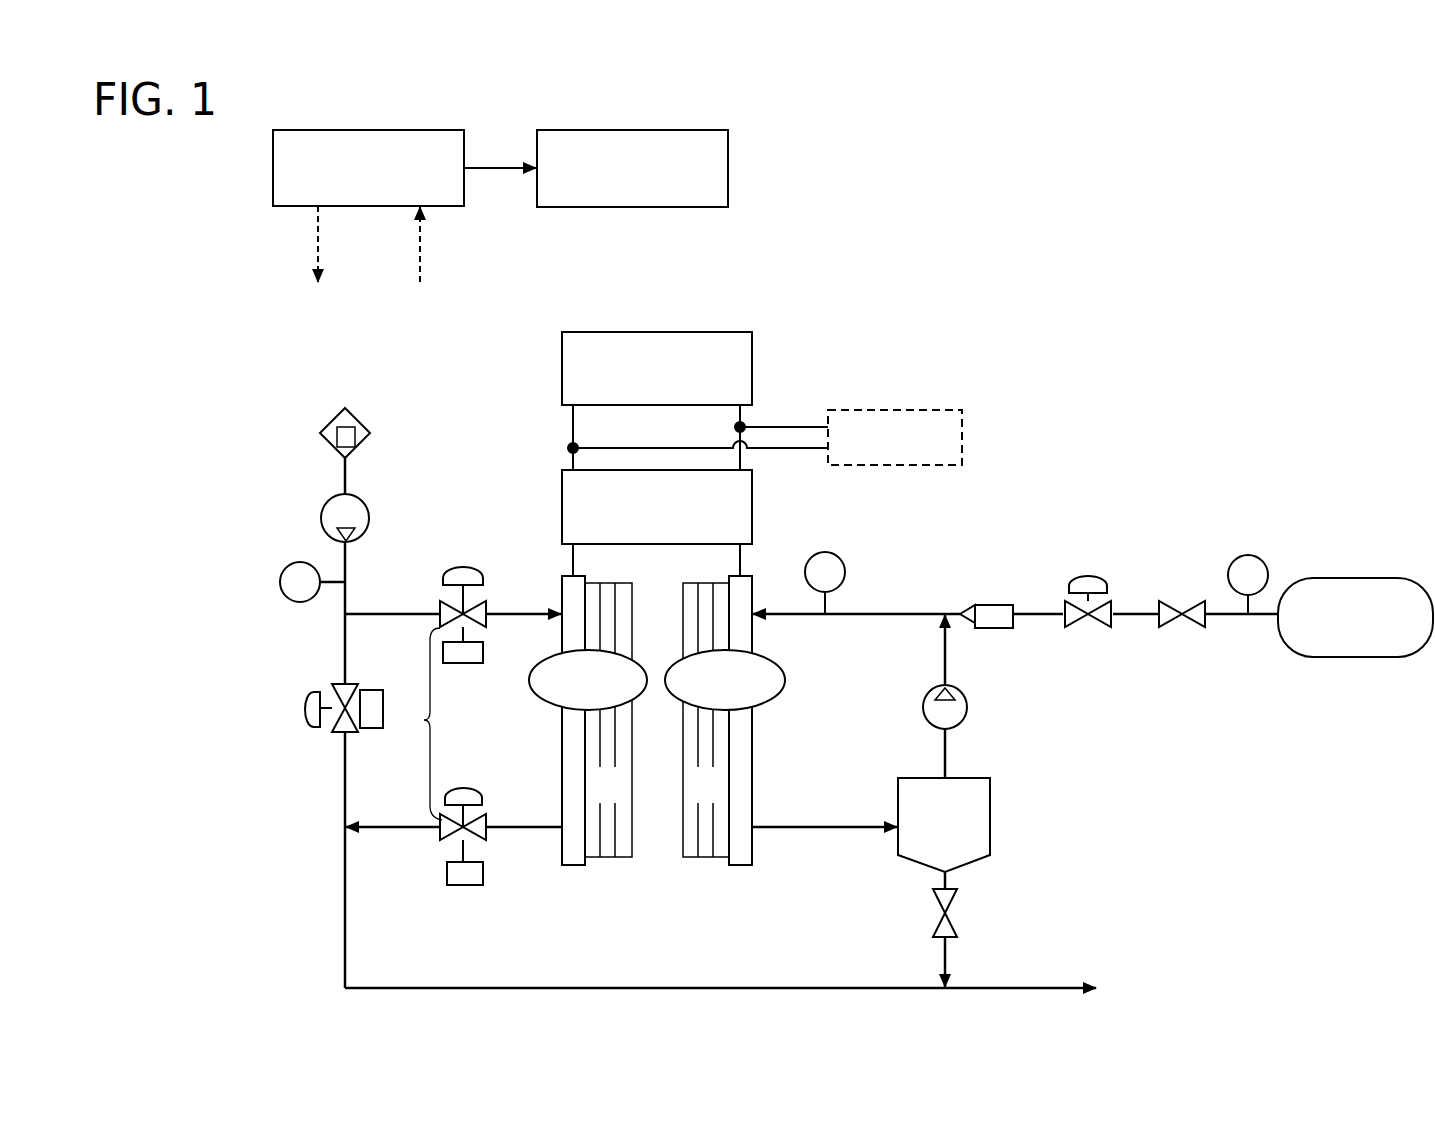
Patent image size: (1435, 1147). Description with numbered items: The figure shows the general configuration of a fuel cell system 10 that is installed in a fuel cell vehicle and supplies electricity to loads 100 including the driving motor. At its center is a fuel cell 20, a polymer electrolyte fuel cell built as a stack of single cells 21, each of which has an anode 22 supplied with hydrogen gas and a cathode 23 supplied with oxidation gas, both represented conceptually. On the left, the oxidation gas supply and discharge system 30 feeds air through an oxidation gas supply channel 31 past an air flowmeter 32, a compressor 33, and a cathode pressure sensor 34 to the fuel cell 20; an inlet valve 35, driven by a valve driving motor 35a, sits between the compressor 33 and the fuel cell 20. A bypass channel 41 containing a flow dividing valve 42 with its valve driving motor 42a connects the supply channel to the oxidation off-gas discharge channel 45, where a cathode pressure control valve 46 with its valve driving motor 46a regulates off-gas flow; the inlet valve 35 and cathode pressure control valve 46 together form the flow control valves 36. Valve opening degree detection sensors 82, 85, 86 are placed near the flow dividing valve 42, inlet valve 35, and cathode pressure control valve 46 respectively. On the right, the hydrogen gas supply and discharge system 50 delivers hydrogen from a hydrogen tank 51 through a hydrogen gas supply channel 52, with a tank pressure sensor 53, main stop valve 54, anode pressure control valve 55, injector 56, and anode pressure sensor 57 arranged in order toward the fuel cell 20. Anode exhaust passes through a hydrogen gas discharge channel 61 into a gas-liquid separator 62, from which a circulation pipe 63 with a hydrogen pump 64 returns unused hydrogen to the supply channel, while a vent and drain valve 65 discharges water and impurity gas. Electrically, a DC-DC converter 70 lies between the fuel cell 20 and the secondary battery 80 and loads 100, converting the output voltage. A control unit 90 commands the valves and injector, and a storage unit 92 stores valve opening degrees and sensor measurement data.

The fuel cell system 10 is at (1035, 262).
The fuel cell 20 is at (669, 752).
The single cell 21 is at (610, 845).
The anode 22 is at (782, 668).
The cathode 23 is at (530, 675).
The oxidation gas supply and discharge system 30 is at (270, 392).
The oxidation gas supply channel 31 is at (375, 612).
The air flowmeter 32 is at (358, 420).
The compressor 33 is at (366, 507).
The cathode pressure sensor 34 is at (290, 562).
The inlet valve 35 is at (488, 606).
The valve driving motor 35a is at (455, 566).
The flow control valves 36 is at (412, 724).
The bypass channel 41 is at (343, 657).
The flow dividing valve 42 is at (335, 730).
The valve driving motor 42a is at (302, 718).
The oxidation off-gas discharge channel 45 is at (345, 898).
The cathode pressure control valve 46 is at (488, 815).
The valve driving motor 46a is at (458, 788).
The hydrogen gas supply and discharge system 50 is at (1113, 499).
The hydrogen tank 51 is at (1349, 578).
The hydrogen gas supply channel 52 is at (878, 612).
The tank pressure sensor 53 is at (1258, 558).
The main stop valve 54 is at (1170, 601).
The anode pressure control valve 55 is at (1090, 578).
The injector 56 is at (1000, 604).
The anode pressure sensor 57 is at (840, 559).
The hydrogen gas discharge channel 61 is at (835, 826).
The gas-liquid separator 62 is at (990, 805).
The circulation pipe 63 is at (950, 746).
The hydrogen pump 64 is at (930, 692).
The vent and drain valve 65 is at (952, 917).
The DC-DC converter 70 is at (752, 508).
The secondary battery 80 is at (752, 362).
The valve opening degree detection sensor 82 is at (366, 730).
The valve opening degree detection sensor 85 is at (484, 652).
The valve opening degree detection sensor 86 is at (484, 870).
The control unit 90 is at (467, 152).
The storage unit 92 is at (729, 152).
The loads 100 is at (922, 410).